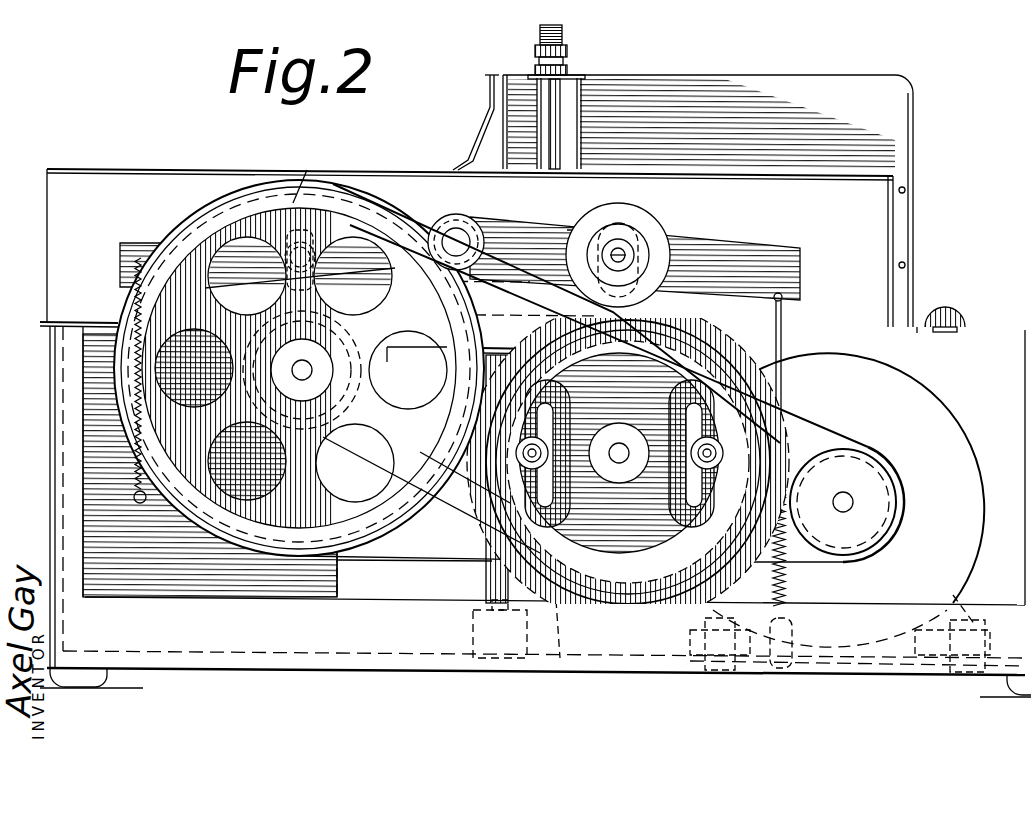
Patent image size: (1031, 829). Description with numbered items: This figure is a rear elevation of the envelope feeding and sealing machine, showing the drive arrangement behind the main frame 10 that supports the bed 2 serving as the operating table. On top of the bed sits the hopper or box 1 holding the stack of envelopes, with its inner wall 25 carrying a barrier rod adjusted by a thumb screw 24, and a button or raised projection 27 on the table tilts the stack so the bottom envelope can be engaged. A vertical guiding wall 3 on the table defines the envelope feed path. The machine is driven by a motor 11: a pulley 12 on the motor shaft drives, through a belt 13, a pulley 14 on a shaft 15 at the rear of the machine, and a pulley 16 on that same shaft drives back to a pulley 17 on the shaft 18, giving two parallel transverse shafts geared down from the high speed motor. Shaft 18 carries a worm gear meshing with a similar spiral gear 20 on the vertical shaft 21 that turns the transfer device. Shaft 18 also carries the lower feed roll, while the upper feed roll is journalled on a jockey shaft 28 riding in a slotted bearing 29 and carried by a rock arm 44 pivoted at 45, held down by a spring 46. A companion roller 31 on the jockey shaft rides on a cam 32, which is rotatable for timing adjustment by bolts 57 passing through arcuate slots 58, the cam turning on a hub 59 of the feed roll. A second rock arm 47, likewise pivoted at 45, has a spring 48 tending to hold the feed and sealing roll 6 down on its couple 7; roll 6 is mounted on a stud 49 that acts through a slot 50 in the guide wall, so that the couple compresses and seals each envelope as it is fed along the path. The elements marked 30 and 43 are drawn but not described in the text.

The hopper or box 1 is at (493, 74).
The bed 2 is at (1001, 331).
The vertical guiding wall 3 is at (887, 213).
The feed and sealing roll 6 is at (322, 206).
The sealing roll 7 is at (324, 362).
The main frame 10 is at (955, 376).
The motor 11 is at (965, 552).
The pulley 12 is at (873, 498).
The belt 13 is at (815, 408).
The pulley 14 is at (218, 214).
The shaft 15 is at (290, 366).
The pulley 16 is at (341, 380).
The pulley 17 is at (632, 604).
The shaft 18 is at (620, 447).
The spiral gear 20 is at (335, 385).
The vertical shaft 21 is at (488, 576).
The thumb screw 24 is at (571, 64).
The inner wall 25 is at (736, 82).
The button or raised projection 27 is at (947, 313).
The jockey shaft 28 is at (697, 242).
The slotted bearing 29 is at (630, 226).
The top plate 30 is at (262, 170).
The companion roller 31 is at (645, 243).
The cam 32 is at (602, 552).
The bar 43 is at (365, 581).
The rock arm 44 is at (798, 258).
The pivot 45 is at (470, 238).
The spring 46 is at (784, 459).
The rock arm 47 is at (120, 250).
The spring 48 is at (80, 392).
The stud 49 is at (626, 512).
The slot 50 is at (300, 202).
The bolts 57 is at (516, 466).
The arcuate slots 58 is at (490, 504).
The hub 59 is at (621, 465).